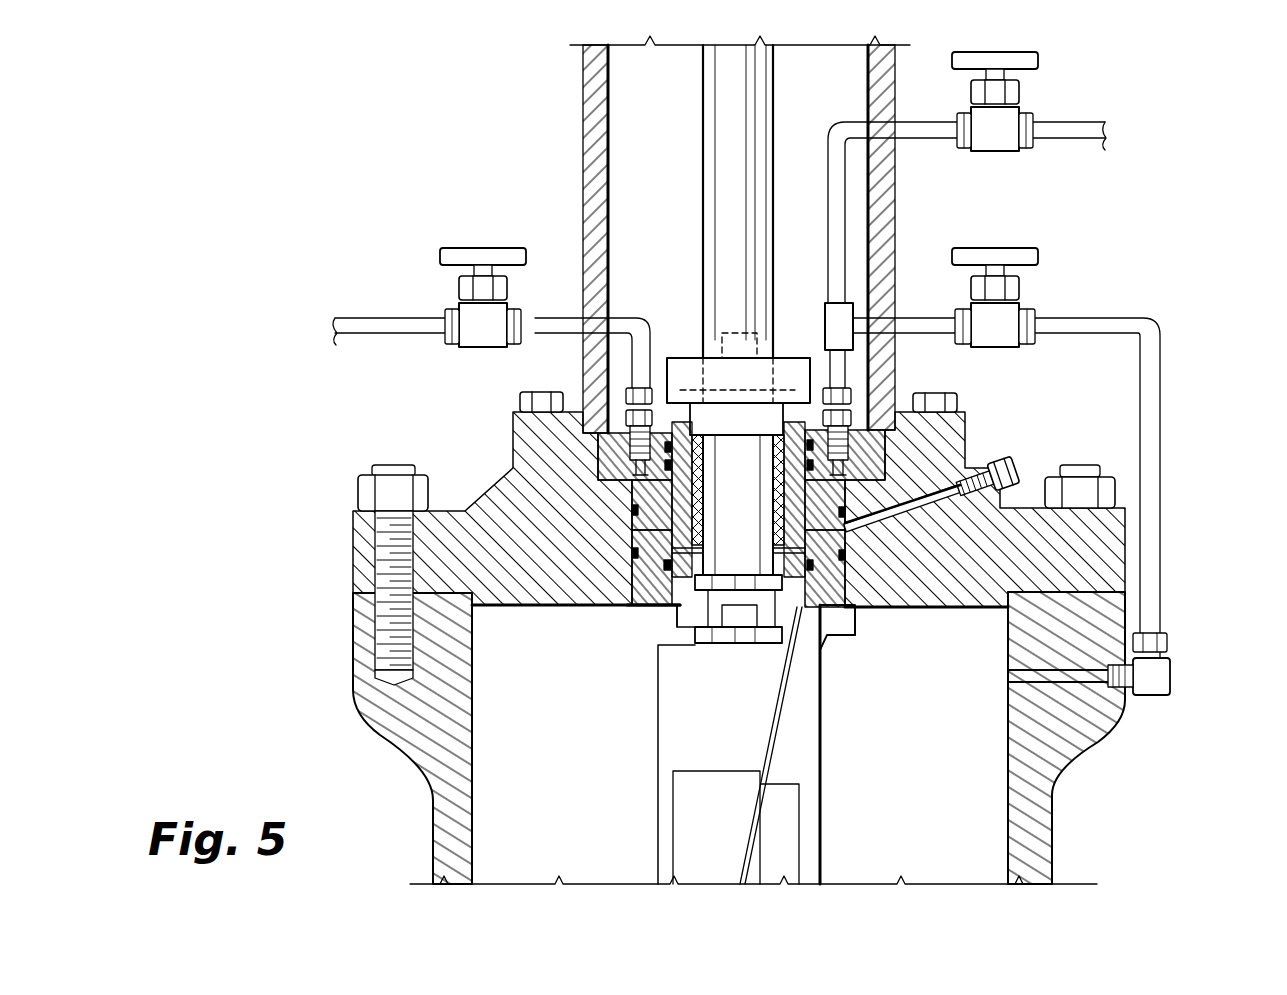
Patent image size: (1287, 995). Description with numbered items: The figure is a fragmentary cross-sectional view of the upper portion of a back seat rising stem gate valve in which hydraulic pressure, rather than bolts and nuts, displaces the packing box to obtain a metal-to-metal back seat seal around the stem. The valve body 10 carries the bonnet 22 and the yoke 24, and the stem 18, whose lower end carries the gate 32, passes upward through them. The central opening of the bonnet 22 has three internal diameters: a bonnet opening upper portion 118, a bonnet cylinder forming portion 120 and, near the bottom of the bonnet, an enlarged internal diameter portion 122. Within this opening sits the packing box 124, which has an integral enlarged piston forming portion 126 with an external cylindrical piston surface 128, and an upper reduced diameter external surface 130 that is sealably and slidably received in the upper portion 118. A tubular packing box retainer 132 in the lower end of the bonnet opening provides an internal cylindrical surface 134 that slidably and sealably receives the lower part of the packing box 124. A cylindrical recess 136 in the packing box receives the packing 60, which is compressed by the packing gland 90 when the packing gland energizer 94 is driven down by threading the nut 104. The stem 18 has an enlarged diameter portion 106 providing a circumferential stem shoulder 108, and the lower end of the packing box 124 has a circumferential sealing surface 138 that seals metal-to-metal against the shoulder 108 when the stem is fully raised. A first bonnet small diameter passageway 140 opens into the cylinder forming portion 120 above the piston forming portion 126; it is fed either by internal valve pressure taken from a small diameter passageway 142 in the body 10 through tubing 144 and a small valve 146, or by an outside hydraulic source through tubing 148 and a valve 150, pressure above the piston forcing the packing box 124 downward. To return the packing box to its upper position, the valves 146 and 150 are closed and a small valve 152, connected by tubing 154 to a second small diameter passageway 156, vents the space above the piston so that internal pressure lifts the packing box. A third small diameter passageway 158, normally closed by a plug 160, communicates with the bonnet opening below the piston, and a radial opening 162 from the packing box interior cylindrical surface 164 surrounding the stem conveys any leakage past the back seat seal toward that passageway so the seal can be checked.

The valve body 10 is at (1040, 750).
The stem 18 is at (720, 106).
The bonnet 22 is at (492, 517).
The yoke 24 is at (597, 152).
The gate 32 is at (822, 840).
The packing 60 is at (847, 548).
The packing gland 90 is at (772, 410).
The packing gland energizer 94 is at (697, 378).
The nut 104 is at (740, 335).
The enlarged diameter portion 106 is at (738, 592).
The circumferential stem shoulder 108 is at (721, 520).
The bonnet opening upper portion 118 is at (668, 390).
The bonnet cylinder forming portion 120 is at (636, 512).
The enlarged internal diameter portion 122 is at (638, 613).
The packing box 124 is at (905, 432).
The piston forming portion 126 is at (835, 497).
The external cylindrical piston surface 128 is at (848, 522).
The reduced diameter external surface 130 is at (851, 410).
The packing box retainer 132 is at (833, 610).
The internal cylindrical surface 134 is at (673, 610).
The cylindrical recess 136 is at (767, 467).
The circumferential sealing surface 138 is at (818, 652).
The first bonnet small diameter passageway 140 is at (885, 482).
The small diameter passageway 142 is at (1067, 676).
The tubing 144 is at (1163, 520).
The small valve 146 is at (998, 324).
The tubing 148 is at (1068, 142).
The valve 150 is at (1003, 108).
The small valve 152 is at (472, 322).
The tubing 154 is at (549, 320).
The second small diameter passageway 156 is at (636, 467).
The third small diameter passageway 158 is at (960, 463).
The plug 160 is at (1013, 468).
The radial opening 162 is at (636, 578).
The packing box interior cylindrical surface 164 is at (773, 560).